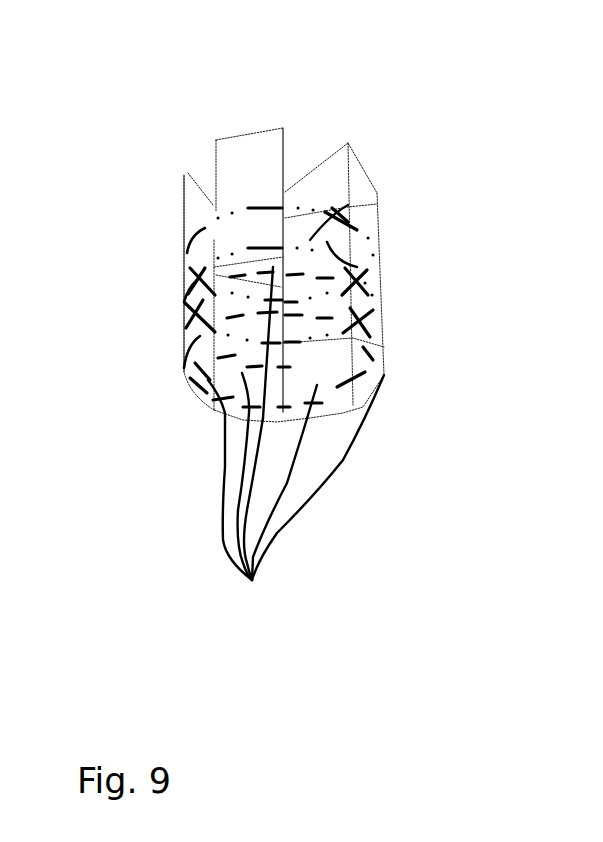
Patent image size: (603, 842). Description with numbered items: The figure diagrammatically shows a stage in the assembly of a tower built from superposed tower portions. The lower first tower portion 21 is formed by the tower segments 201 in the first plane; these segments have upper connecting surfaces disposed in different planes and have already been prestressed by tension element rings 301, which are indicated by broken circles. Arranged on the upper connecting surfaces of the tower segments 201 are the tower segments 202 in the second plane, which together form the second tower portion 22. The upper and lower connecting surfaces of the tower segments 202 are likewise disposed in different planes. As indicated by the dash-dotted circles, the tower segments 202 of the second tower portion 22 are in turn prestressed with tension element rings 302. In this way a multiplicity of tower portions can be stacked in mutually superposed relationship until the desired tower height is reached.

The tower segments in the second plane 202 is at (203, 210).
The tension element rings 302 is at (313, 257).
The tension element rings 301 is at (305, 365).
The second tower portion 22 is at (158, 233).
The first tower portion 21 is at (158, 341).
The tower segments in the first plane 201 is at (296, 494).